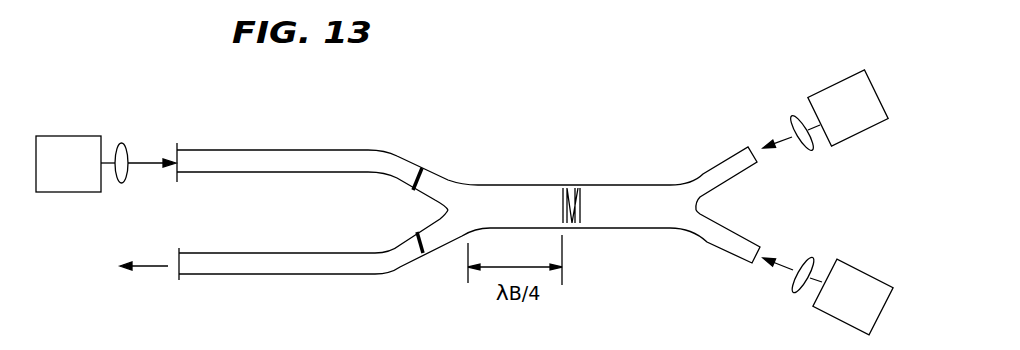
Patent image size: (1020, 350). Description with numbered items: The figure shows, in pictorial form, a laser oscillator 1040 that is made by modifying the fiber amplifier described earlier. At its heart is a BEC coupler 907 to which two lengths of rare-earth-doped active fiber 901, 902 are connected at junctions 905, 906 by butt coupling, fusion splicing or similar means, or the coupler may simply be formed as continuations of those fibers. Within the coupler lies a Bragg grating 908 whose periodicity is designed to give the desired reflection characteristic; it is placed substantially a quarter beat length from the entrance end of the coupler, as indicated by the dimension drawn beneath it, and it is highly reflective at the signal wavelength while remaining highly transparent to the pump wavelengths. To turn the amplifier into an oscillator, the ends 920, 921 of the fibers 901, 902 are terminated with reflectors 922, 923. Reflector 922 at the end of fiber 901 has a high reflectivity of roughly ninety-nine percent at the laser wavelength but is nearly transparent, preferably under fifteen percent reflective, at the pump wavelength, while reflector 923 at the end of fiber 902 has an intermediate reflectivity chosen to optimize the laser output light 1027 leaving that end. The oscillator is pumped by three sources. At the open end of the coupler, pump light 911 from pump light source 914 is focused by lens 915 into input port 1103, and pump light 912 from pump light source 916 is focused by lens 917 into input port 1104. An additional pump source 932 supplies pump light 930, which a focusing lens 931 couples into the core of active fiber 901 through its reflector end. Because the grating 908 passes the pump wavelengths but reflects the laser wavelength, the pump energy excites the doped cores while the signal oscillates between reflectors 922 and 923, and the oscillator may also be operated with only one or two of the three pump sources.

The additional pump source 932 is at (67, 137).
The focusing lens 931 is at (123, 143).
The pump light 930 is at (140, 161).
The end of fiber 901 920 is at (182, 162).
The reflector 922 is at (180, 176).
The active fiber 901 is at (283, 148).
The active fiber 902 is at (283, 252).
The connection junction 905 is at (412, 168).
The connection junction 906 is at (405, 245).
The BEC coupler 907 is at (463, 238).
The Bragg grating 908 is at (567, 185).
The laser oscillator 1040 is at (597, 71).
The input port 1103 is at (707, 167).
The input port 1104 is at (708, 245).
The pump light 911 is at (773, 140).
The pump light 912 is at (787, 265).
The pump light source 914 is at (840, 80).
The focusing lens 915 is at (807, 150).
The pump light source 916 is at (863, 268).
The focusing lens 917 is at (810, 258).
The end of fiber 902 921 is at (180, 267).
The reflector 923 is at (179, 280).
The laser output light 1027 is at (144, 251).